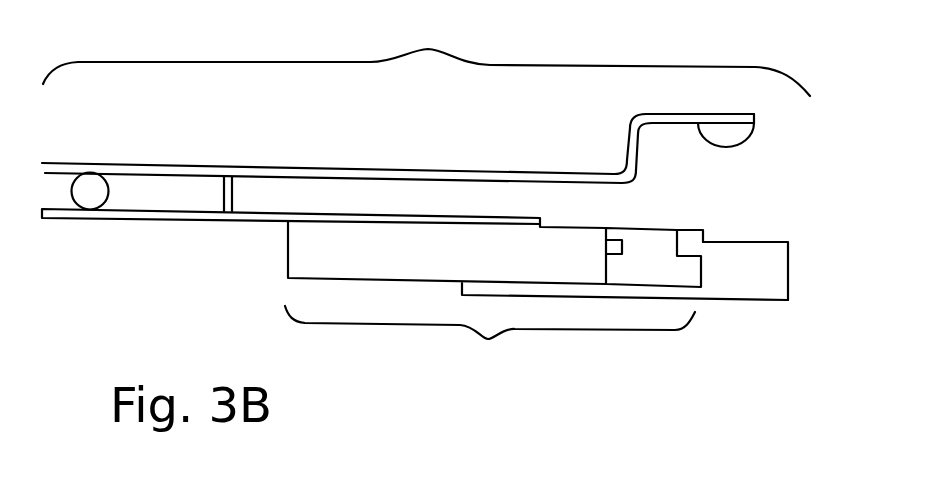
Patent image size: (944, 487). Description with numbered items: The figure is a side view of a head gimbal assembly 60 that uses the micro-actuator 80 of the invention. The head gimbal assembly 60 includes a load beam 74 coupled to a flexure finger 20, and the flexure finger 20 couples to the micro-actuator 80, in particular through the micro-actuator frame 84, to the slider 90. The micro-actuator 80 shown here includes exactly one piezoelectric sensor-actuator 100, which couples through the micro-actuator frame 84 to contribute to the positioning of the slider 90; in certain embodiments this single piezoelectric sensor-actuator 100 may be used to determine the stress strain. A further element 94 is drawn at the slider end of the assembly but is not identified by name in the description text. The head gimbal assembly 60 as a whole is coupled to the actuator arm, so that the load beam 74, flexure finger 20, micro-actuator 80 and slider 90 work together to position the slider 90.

The head gimbal assembly 60 is at (426, 49).
The load beam 74 is at (268, 166).
The flexure finger 20 is at (87, 220).
The piezoelectric sensor-actuator 100 is at (447, 253).
The micro-actuator frame 84 is at (638, 229).
The slider 90 is at (756, 242).
The bottom plate 94 is at (790, 302).
The micro-actuator 80 is at (490, 346).